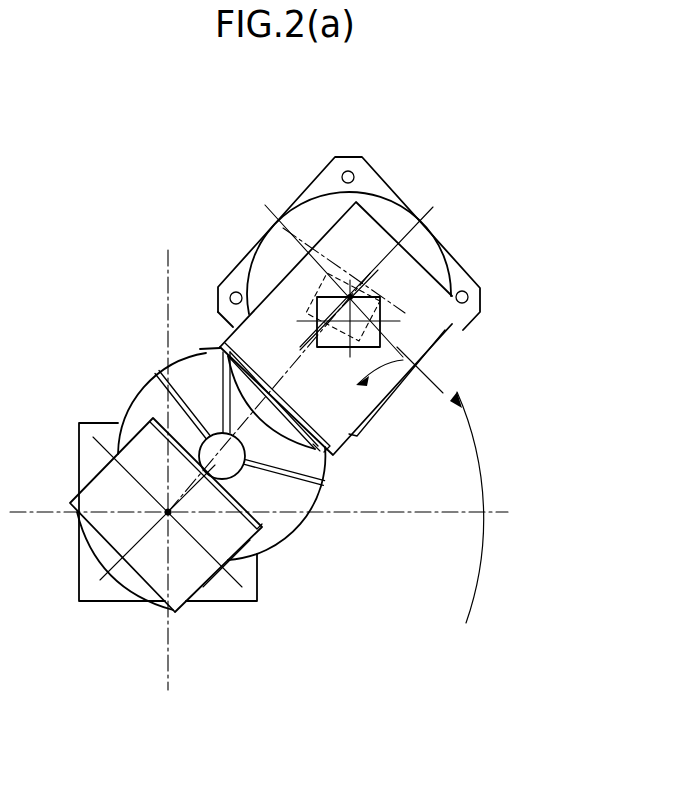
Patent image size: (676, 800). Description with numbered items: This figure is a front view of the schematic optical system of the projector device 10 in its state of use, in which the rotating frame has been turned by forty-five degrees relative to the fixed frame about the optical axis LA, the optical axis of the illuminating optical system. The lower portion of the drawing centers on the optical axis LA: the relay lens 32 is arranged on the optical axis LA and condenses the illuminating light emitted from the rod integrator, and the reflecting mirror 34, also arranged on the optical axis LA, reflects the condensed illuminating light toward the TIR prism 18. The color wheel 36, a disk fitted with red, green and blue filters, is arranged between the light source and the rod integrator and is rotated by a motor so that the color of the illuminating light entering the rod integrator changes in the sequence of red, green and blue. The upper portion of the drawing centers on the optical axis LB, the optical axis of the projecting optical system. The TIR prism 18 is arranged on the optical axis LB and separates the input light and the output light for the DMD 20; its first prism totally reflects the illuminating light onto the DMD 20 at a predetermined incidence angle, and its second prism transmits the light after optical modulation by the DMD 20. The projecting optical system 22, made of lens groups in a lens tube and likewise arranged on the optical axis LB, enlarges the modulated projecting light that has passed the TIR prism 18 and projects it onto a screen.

The projector device 10 is at (117, 184).
The TIR prism 18 is at (377, 243).
The DMD 20 is at (390, 343).
The projecting optical system 22 is at (370, 197).
The relay lens 32 is at (122, 580).
The reflecting mirror 34 is at (185, 582).
The color wheel 36 is at (275, 535).
The optical axis LA is at (166, 512).
The optical axis LB is at (348, 295).